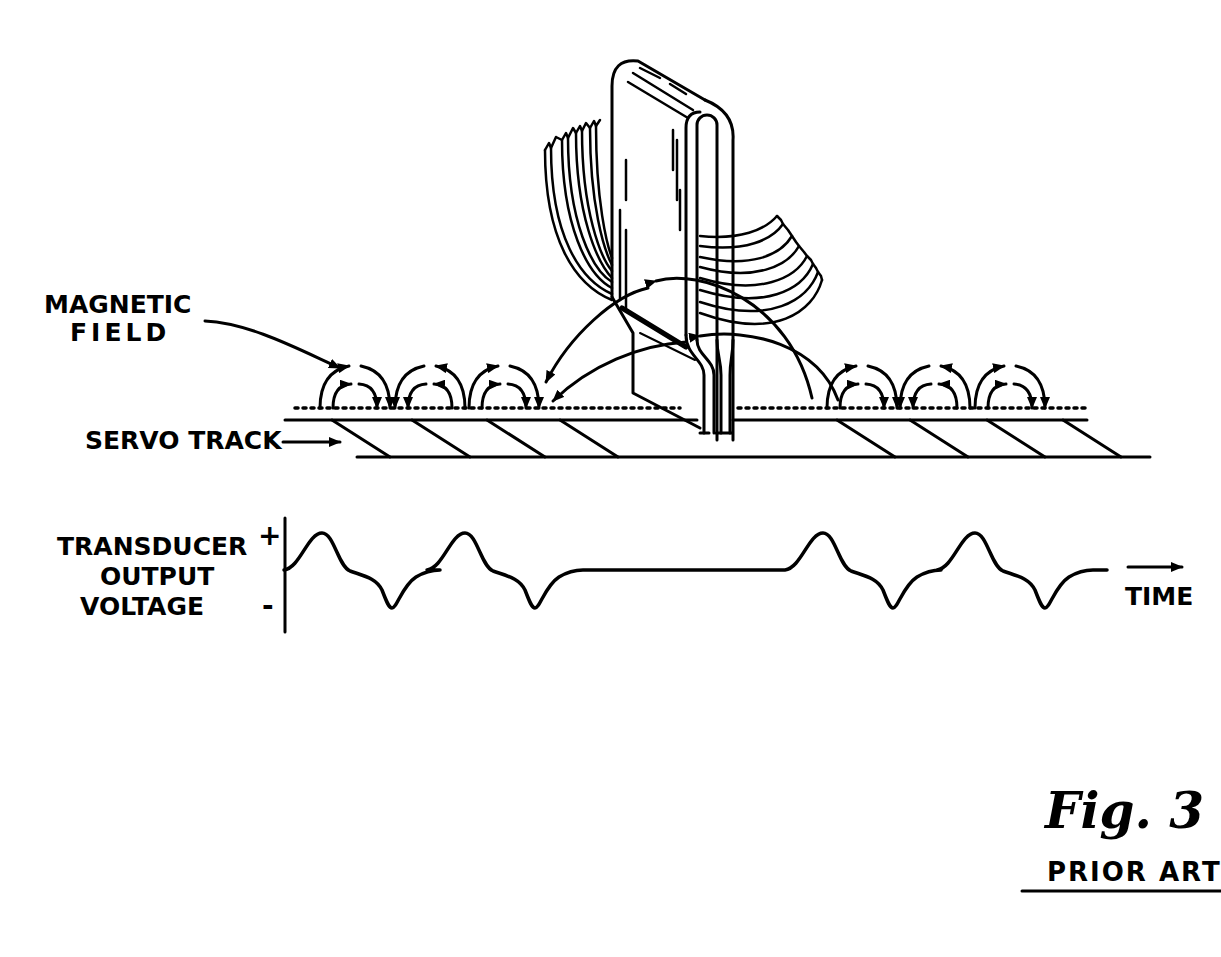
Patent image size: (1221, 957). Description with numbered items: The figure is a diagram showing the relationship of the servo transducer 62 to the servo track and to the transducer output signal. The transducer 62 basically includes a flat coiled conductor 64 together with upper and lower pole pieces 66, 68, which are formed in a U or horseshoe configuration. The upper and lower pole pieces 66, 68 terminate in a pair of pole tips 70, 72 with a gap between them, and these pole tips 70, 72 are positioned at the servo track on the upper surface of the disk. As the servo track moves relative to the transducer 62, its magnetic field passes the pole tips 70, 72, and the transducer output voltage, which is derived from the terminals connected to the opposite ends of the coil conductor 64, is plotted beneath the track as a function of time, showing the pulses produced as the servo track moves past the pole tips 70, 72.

The transducer 62 is at (745, 101).
The flat coiled conductor 64 is at (545, 188).
The upper pole piece 66 is at (627, 127).
The lower pole piece 68 is at (728, 158).
The pole tip 70 is at (703, 437).
The pole tip 72 is at (723, 436).